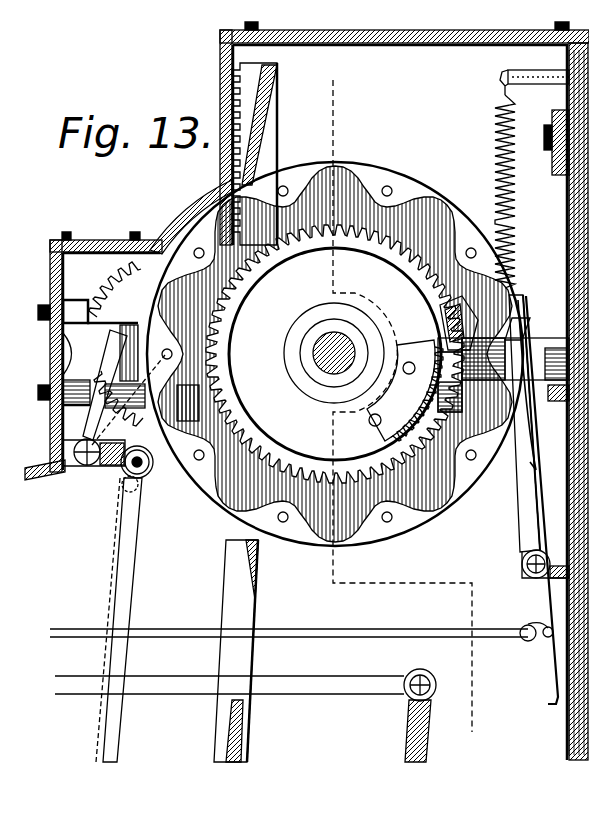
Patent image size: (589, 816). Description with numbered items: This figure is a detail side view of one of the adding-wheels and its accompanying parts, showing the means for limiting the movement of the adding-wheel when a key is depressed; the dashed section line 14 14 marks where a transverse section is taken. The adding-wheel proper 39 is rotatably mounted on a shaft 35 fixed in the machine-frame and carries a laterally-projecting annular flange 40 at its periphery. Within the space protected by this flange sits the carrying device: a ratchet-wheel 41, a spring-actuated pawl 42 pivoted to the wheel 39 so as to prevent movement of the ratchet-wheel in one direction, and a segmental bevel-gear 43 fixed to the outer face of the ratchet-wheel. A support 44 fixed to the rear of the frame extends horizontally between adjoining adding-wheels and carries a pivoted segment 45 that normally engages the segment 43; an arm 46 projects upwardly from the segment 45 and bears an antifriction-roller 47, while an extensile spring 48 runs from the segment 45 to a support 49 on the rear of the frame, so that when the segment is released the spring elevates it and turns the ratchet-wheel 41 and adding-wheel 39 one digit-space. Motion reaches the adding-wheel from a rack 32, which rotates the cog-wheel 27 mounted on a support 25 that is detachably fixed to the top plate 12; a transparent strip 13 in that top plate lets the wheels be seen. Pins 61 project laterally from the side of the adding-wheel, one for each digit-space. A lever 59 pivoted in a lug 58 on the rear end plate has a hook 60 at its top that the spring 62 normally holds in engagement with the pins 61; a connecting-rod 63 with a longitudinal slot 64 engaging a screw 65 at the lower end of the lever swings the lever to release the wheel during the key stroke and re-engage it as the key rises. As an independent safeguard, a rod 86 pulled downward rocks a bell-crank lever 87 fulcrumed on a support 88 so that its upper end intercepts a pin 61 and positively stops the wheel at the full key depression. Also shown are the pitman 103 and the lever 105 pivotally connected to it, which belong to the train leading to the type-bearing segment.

The top plate 12 is at (470, 42).
The transparent strip 13 is at (195, 200).
The section line 14 is at (408, 407).
The support 25 is at (70, 352).
The cog-wheel 27 is at (112, 343).
The rack 32 is at (274, 120).
The shaft 35 is at (326, 350).
The adding-wheel 39 is at (357, 162).
The annular flange 40 is at (449, 203).
The ratchet-wheel 41 is at (335, 354).
The spring-actuated pawl 42 is at (200, 408).
The segmental bevel-gear 43 is at (372, 442).
The support 44 is at (515, 255).
The segment 45 is at (440, 362).
The arm 46 is at (440, 308).
The antifriction-roller 47 is at (445, 322).
The extensile spring 48 is at (496, 140).
The support 49 is at (531, 76).
The lug 58 is at (558, 548).
The lever 59 is at (518, 510).
The hook 60 is at (520, 325).
The pins 61 is at (391, 186).
The spring 62 is at (537, 450).
The connecting-rod 63 is at (372, 630).
The longitudinal slot 64 is at (525, 642).
The screw 65 is at (540, 628).
The rod 86 is at (124, 550).
The bell-crank lever 87 is at (112, 336).
The support 88 is at (85, 466).
The pitman 103 is at (326, 678).
The lever 105 is at (408, 720).